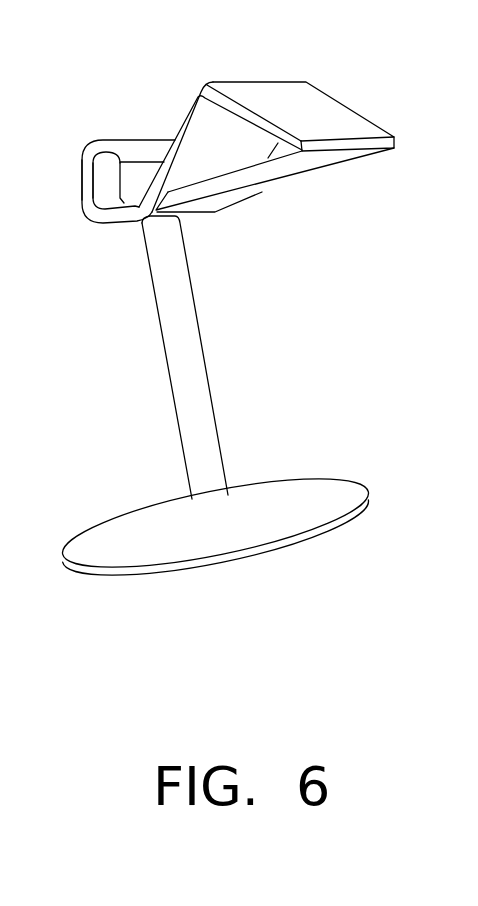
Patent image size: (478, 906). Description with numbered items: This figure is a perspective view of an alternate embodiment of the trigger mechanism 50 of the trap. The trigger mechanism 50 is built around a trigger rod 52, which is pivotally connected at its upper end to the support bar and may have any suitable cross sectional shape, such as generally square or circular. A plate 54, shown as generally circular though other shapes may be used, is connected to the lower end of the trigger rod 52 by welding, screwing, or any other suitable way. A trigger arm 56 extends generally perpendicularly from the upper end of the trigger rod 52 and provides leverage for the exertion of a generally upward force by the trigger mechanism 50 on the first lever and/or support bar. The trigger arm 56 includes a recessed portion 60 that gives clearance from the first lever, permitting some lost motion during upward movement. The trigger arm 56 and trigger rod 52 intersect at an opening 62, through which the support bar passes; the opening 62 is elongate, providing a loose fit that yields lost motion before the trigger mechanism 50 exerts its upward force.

The trigger mechanism 50 is at (178, 622).
The trigger rod 52 is at (186, 350).
The plate 54 is at (266, 536).
The trigger arm 56 is at (262, 92).
The recessed portion 60 is at (163, 161).
The opening 62 is at (106, 186).